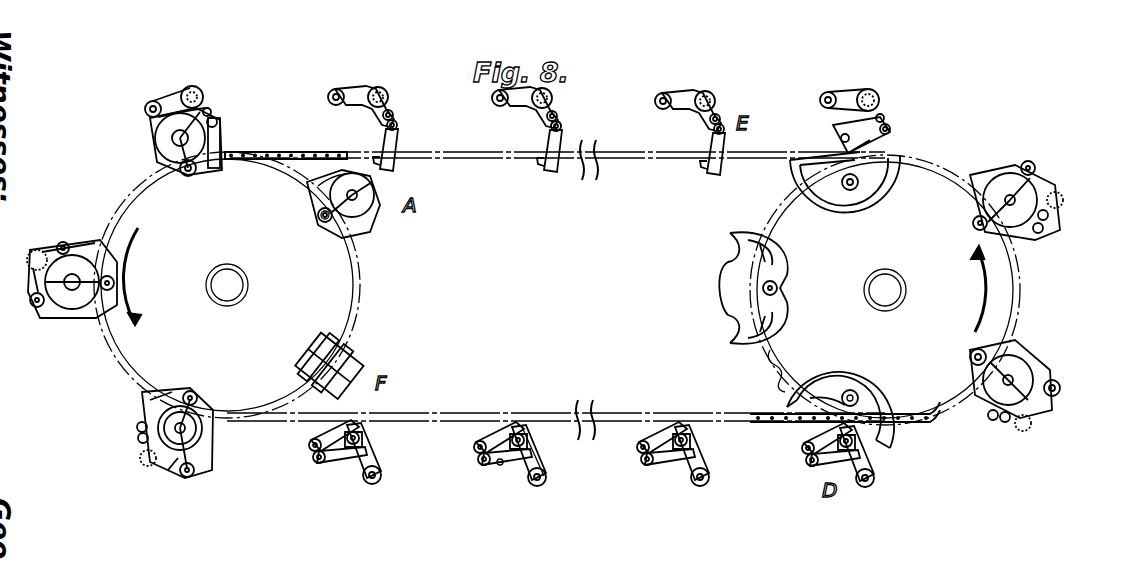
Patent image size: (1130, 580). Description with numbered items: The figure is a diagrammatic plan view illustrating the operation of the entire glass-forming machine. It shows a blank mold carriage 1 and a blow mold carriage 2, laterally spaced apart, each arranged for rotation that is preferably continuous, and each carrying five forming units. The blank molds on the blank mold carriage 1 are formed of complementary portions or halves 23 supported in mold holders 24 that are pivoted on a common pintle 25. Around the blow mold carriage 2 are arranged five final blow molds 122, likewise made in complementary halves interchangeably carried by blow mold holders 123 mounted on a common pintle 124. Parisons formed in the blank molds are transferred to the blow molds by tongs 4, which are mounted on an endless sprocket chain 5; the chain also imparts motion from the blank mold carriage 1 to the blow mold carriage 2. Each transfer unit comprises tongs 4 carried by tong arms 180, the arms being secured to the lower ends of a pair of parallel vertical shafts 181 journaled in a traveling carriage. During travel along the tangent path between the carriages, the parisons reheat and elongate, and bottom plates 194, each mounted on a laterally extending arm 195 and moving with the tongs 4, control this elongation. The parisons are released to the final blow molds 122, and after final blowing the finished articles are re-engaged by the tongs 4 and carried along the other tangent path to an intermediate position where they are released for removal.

The blank mold carriage 1 is at (392, 283).
The blow mold carriage 2 is at (752, 363).
The tongs 4 is at (510, 106).
The sprocket chain 5 is at (300, 150).
The complementary portions or halves 23 is at (368, 195).
The mold holders 24 is at (325, 186).
The pintle 25 is at (328, 222).
The final blow molds 122 is at (1015, 368).
The blow mold holders 123 is at (1000, 182).
The pintle 124 is at (786, 289).
The tong arms 180 is at (500, 465).
The vertical shafts 181 is at (562, 128).
The bottom plates 194 is at (875, 101).
The laterally extending arm 195 is at (548, 460).